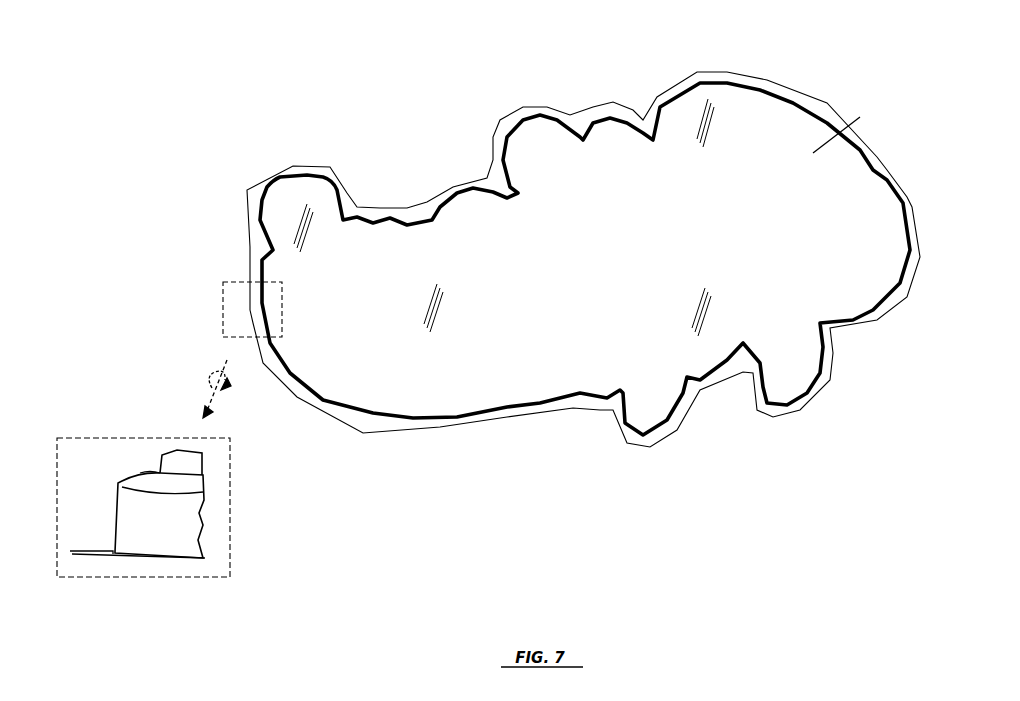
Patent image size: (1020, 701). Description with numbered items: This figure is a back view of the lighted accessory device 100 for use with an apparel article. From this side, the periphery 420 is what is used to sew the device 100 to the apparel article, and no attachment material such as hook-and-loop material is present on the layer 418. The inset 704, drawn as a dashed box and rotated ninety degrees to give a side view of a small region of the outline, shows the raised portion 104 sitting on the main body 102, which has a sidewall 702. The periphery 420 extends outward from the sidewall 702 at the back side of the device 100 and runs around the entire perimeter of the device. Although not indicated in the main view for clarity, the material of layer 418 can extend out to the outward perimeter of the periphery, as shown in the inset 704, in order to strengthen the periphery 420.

The lighted accessory device 100 is at (514, 28).
The main body 102 is at (147, 472).
The raised portion 104 is at (180, 450).
The layer 418 is at (860, 117).
The periphery 420 is at (790, 93).
The sidewall 702 is at (460, 190).
The inset 704 is at (222, 290).